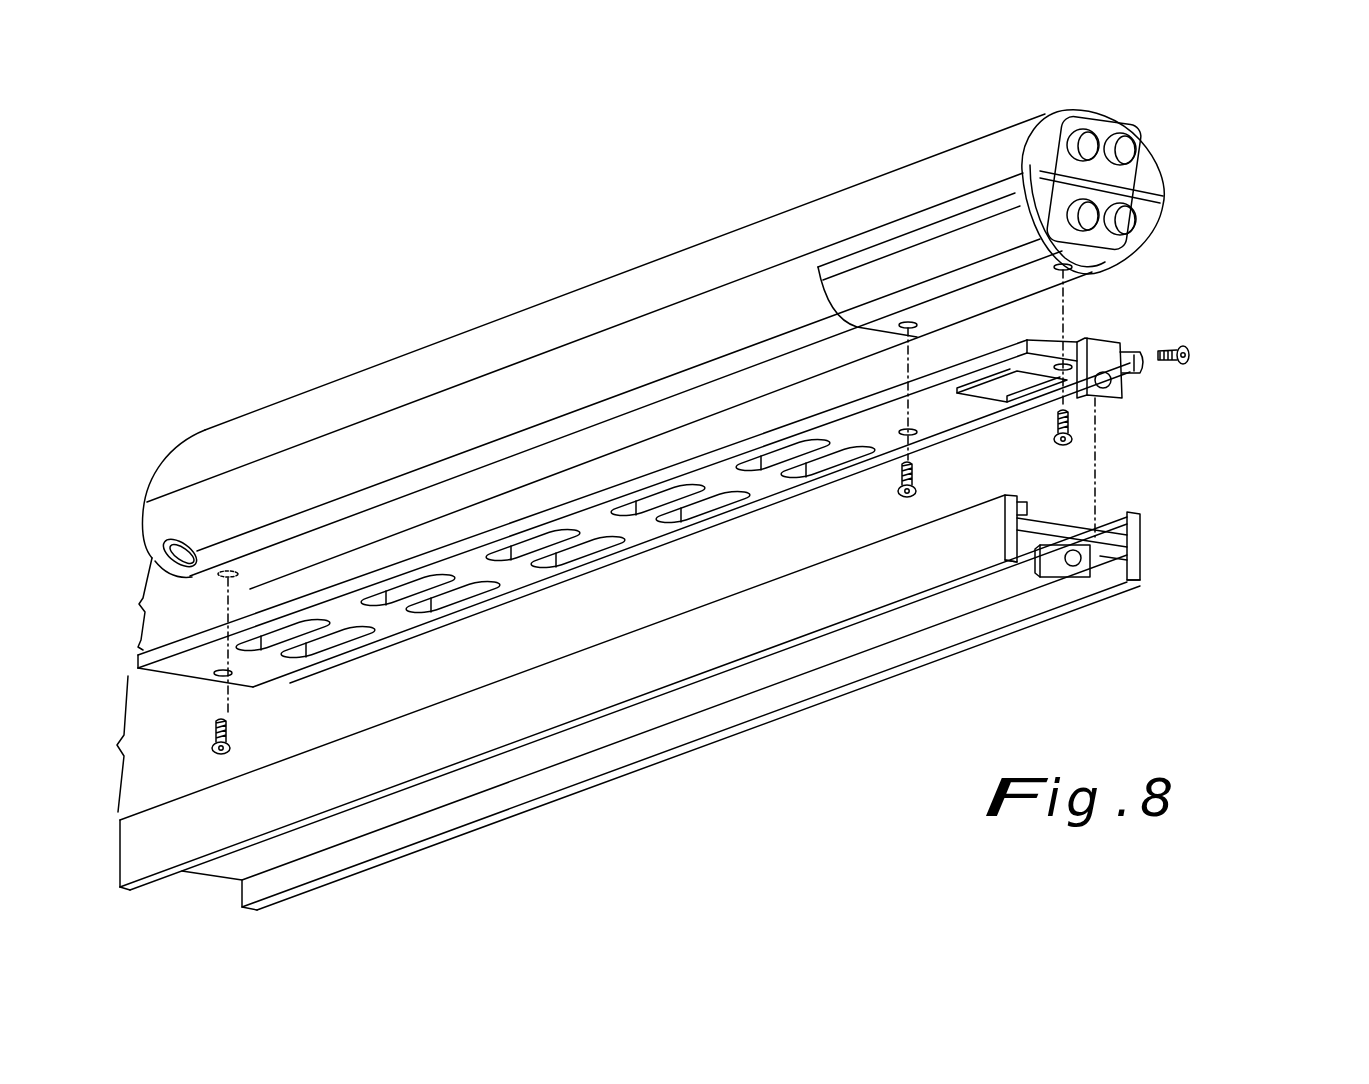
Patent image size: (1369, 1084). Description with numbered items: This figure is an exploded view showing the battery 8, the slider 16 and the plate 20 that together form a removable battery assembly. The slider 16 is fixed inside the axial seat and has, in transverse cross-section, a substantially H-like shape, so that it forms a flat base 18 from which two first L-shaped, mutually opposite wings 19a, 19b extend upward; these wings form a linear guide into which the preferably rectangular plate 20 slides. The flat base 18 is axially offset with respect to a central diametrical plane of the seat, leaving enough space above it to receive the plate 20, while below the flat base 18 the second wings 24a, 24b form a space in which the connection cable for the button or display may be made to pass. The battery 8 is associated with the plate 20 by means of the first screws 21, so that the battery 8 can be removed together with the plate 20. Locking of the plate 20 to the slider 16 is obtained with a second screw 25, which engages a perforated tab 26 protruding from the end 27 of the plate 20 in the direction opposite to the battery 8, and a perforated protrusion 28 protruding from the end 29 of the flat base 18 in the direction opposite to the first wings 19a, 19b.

The battery 8 is at (585, 266).
The end of the plate 27 is at (1028, 332).
The plate 20 is at (1110, 329).
The perforated tab 26 is at (1112, 349).
The second screw 25 is at (1193, 351).
The first screws 21 is at (220, 748).
The slider 16 is at (1158, 555).
The flat base 18 is at (1070, 517).
The first L-shaped wing 19a is at (1133, 516).
The first L-shaped wing 19b is at (1022, 510).
The perforated protrusion 28 is at (1068, 580).
The end of the flat base 29 is at (1116, 570).
The second wing 24a is at (1141, 581).
The second wing 24b is at (1009, 563).